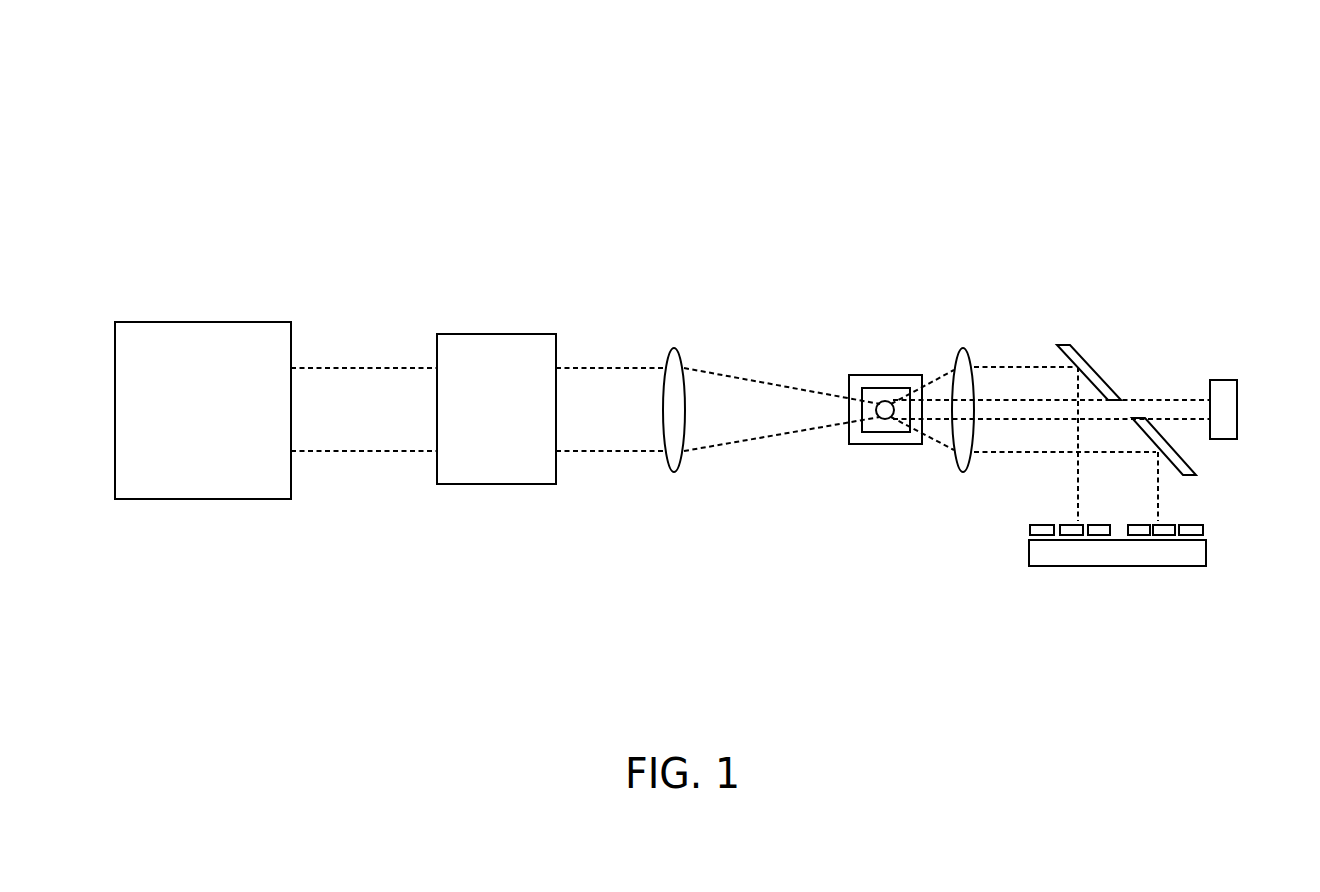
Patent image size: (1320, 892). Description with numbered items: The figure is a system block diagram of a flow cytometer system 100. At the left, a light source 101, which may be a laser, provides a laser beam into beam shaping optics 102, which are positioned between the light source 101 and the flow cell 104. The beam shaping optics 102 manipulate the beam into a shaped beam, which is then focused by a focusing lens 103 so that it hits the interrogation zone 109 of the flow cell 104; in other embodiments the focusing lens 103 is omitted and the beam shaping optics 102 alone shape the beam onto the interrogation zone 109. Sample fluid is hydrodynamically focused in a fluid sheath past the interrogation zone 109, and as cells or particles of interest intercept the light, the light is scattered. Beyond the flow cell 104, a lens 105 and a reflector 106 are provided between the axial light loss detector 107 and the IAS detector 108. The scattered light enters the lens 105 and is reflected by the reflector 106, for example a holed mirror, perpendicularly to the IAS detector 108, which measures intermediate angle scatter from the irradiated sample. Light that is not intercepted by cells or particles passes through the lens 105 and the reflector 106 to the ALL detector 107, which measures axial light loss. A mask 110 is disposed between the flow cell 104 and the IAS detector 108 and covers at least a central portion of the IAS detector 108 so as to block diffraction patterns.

The system 100 is at (244, 140).
The light source 101 is at (218, 422).
The beam shaping optics 102 is at (516, 422).
The focusing lens 103 is at (663, 463).
The flow cell 104 is at (849, 437).
The lens 105 is at (955, 462).
The reflector 106 is at (1088, 360).
The axial light loss (ALL) detector 107 is at (1238, 388).
The IAS detector 108 is at (1148, 566).
The interrogation zone 109 is at (887, 432).
The mask 110 is at (1030, 510).